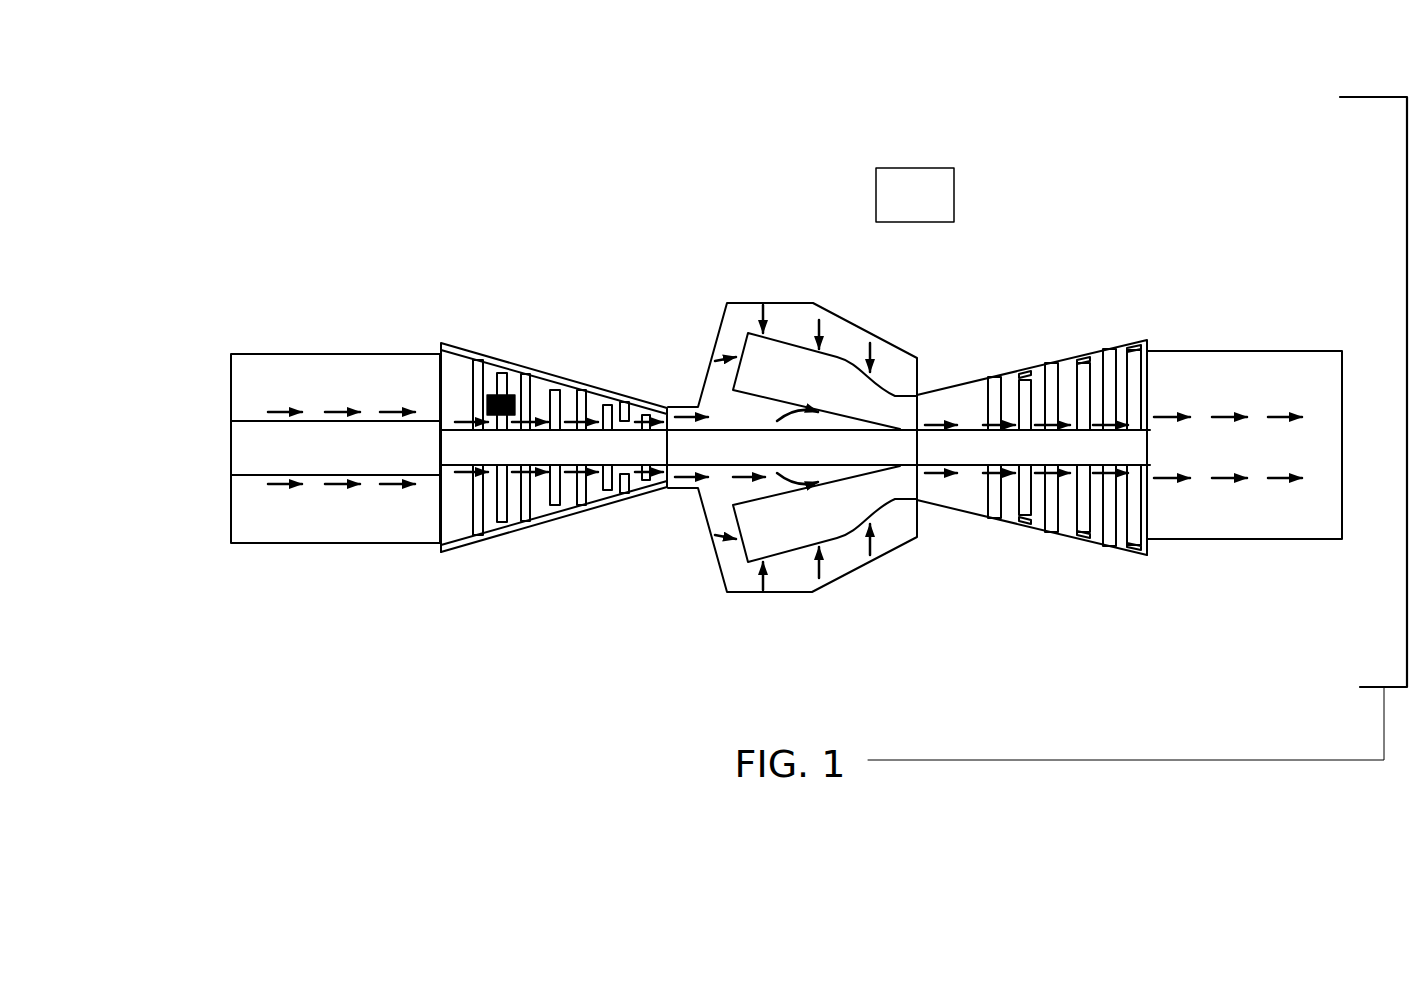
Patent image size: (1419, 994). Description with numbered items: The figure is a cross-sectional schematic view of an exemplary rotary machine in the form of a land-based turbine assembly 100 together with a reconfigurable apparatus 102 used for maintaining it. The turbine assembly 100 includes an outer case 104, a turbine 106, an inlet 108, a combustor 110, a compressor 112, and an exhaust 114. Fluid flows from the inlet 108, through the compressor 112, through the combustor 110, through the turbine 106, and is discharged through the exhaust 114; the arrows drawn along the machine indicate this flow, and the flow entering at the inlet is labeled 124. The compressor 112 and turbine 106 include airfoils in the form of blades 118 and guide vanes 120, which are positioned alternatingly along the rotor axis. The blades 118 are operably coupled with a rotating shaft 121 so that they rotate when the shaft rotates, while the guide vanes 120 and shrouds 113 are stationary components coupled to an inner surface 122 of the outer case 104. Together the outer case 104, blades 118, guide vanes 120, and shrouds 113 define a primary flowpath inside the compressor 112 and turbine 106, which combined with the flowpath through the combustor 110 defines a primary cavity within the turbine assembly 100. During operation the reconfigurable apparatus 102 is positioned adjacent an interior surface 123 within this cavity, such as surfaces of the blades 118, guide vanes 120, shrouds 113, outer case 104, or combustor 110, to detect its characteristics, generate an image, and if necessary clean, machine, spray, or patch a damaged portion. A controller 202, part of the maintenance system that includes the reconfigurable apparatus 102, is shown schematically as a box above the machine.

The turbine assembly 100 is at (1158, 170).
The reconfigurable apparatus 102 is at (476, 403).
The outer case 104 is at (1146, 338).
The turbine 106 is at (1051, 553).
The inlet 108 is at (214, 513).
The combustor 110 is at (771, 601).
The compressor 112 is at (508, 553).
The shrouds 113 is at (1023, 530).
The exhaust 114 is at (1351, 529).
The blades 118 is at (503, 374).
The guide vanes 120 is at (472, 378).
The rotating shaft 121 is at (450, 450).
The inner surface 122 is at (937, 405).
The interior surface 123 is at (622, 486).
The inlet air flow 124 is at (230, 385).
The controller 202 is at (895, 207).